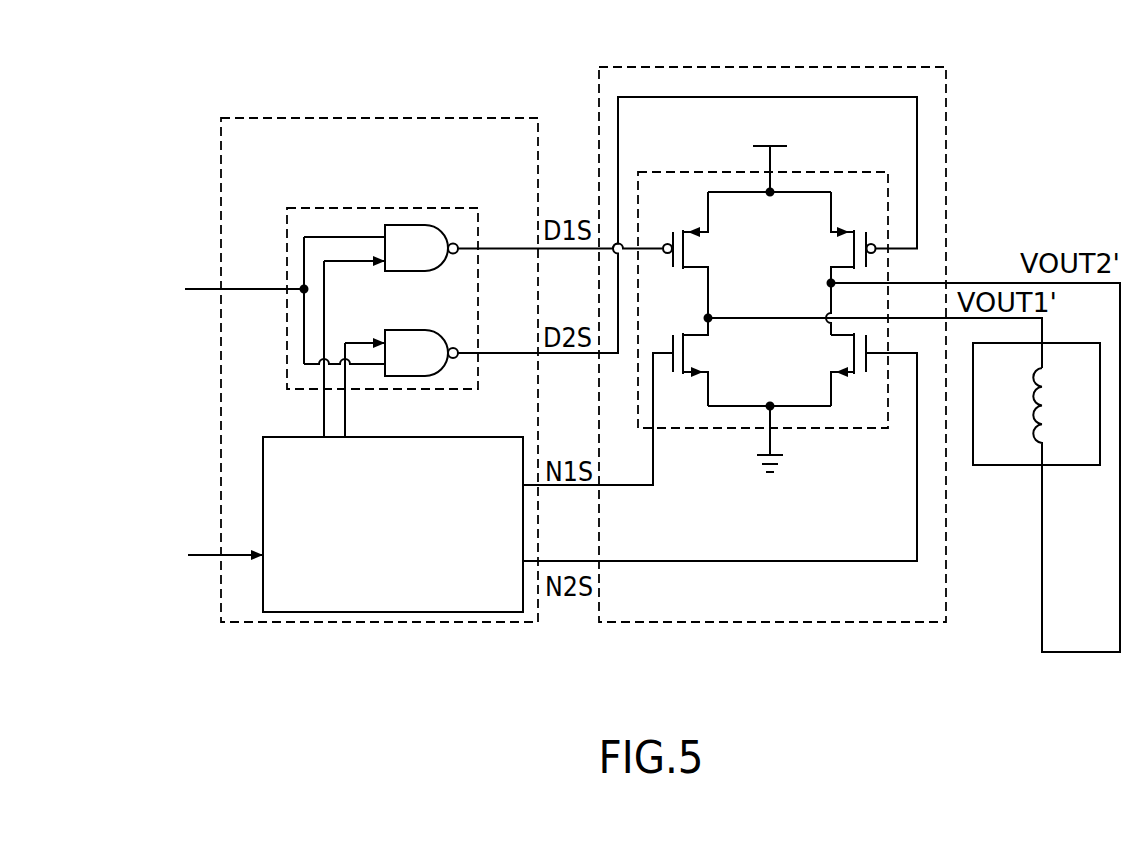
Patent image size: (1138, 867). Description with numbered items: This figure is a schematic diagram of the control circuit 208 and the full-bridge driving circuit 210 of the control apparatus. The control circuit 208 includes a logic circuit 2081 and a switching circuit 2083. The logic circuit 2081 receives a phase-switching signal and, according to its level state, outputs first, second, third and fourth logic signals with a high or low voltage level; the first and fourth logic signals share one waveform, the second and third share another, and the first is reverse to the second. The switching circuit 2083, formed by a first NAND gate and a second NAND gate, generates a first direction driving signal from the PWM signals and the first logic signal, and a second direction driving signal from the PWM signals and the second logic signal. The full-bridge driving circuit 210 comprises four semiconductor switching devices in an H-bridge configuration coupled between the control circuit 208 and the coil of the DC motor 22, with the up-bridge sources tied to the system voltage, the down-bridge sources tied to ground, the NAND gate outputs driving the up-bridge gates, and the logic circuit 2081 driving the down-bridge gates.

The control circuit 208 is at (290, 118).
The switching circuit 2083 is at (417, 208).
The logic circuit 2081 is at (393, 524).
The full-bridge driving circuit 210 is at (848, 428).
The DC motor 22 is at (1005, 465).